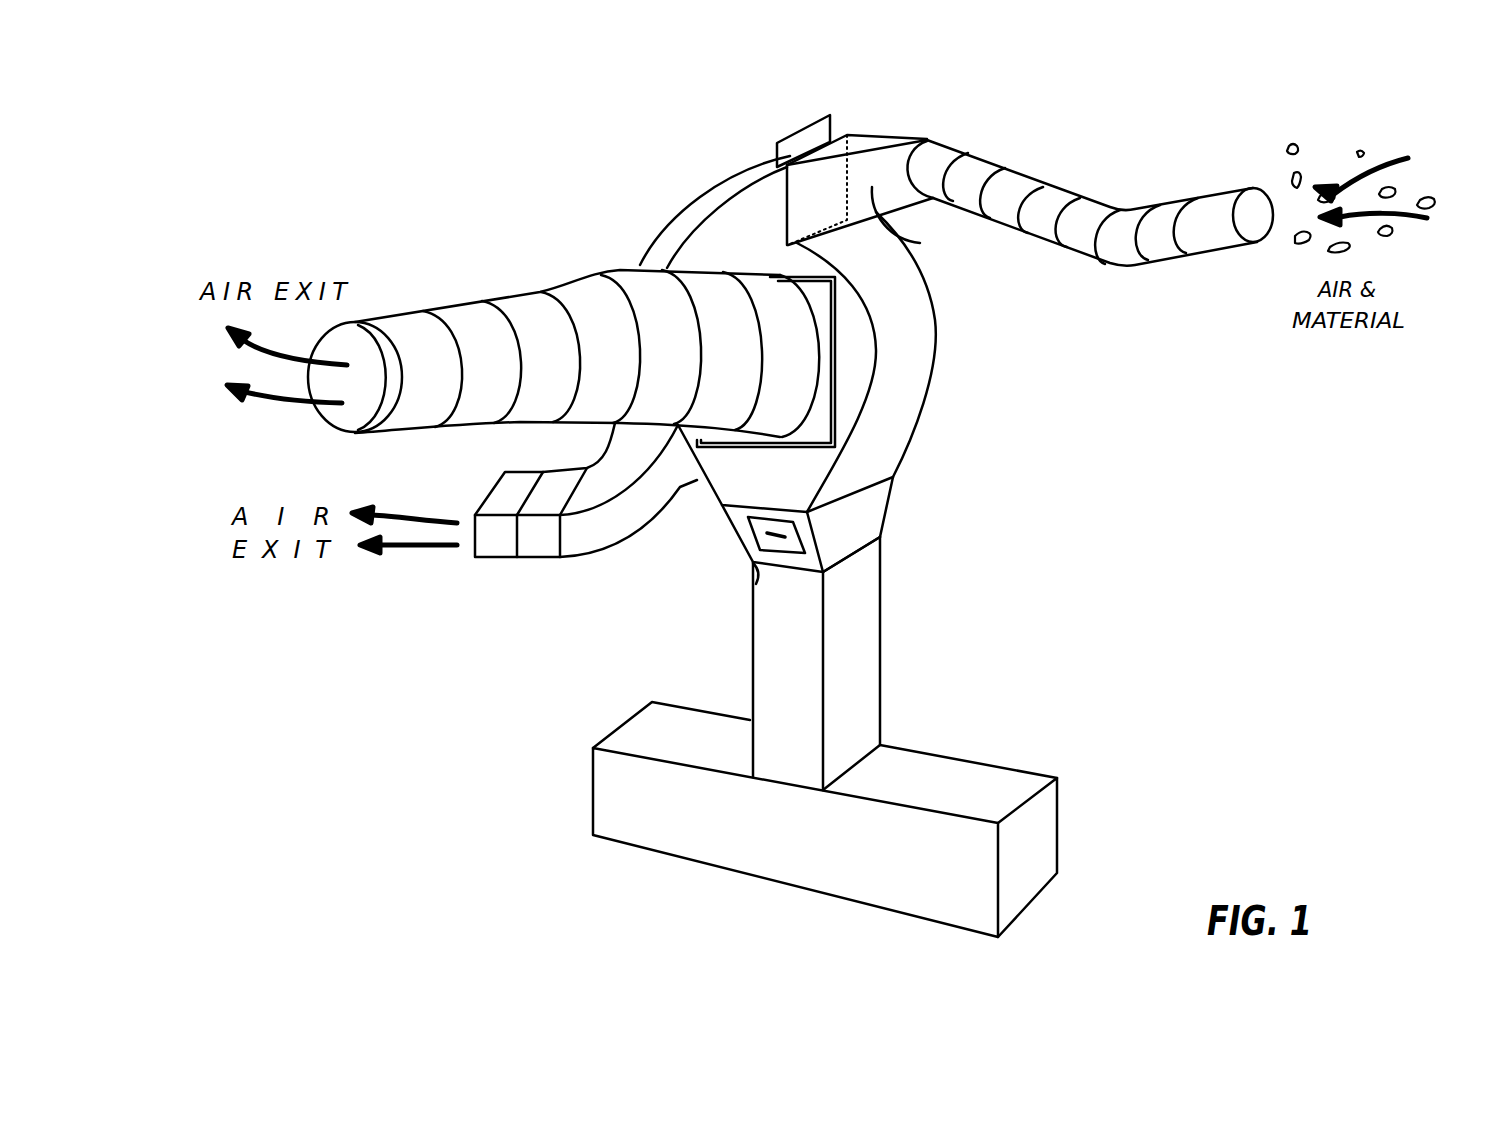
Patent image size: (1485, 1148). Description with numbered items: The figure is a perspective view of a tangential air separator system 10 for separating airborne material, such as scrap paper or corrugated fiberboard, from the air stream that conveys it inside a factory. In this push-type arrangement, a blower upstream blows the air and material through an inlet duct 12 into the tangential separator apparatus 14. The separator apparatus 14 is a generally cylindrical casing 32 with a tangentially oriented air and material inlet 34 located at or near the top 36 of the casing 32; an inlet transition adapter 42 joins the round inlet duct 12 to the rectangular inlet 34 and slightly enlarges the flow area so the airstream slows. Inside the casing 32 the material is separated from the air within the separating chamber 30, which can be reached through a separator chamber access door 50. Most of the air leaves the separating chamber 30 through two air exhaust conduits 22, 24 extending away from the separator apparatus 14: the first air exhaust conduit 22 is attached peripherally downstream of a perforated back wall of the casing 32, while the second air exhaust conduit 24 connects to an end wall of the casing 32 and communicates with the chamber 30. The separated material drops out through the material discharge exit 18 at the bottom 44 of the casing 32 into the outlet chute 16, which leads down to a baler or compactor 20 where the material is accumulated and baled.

The tangential air separator system 10 is at (492, 150).
The inlet duct 12 is at (1153, 213).
The tangential separator apparatus 14 is at (877, 442).
The outlet chute 16 is at (853, 630).
The material discharge exit 18 is at (847, 553).
The baler or compactor 20 is at (990, 787).
The first air exhaust conduit 22 is at (587, 537).
The second air exhaust conduit 24 is at (523, 313).
The separating chamber 30 is at (787, 491).
The cylindrical casing 32 is at (870, 393).
The air and material inlet 34 is at (813, 200).
The top of cylindrical casing 36 is at (765, 175).
The inlet transition adapter 42 is at (920, 243).
The bottom of cylindrical casing 44 is at (755, 575).
The separator chamber access door 50 is at (748, 522).